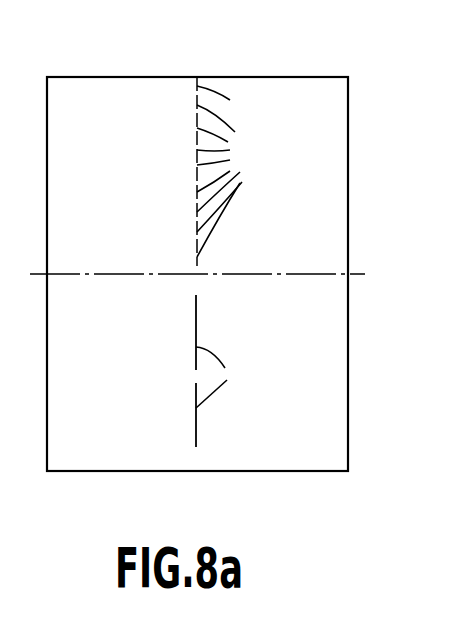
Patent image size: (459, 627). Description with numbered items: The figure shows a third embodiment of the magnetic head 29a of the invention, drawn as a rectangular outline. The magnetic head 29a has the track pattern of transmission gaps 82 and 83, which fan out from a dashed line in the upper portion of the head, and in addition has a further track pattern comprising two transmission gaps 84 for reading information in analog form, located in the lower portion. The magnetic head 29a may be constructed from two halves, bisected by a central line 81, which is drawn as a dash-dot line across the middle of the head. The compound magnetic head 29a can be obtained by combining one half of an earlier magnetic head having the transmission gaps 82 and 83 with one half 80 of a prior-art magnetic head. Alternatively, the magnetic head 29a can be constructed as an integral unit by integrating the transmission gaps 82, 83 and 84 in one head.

The magnetic head 29a is at (68, 72).
The half of the prior-art magnetic head 80 is at (100, 456).
The central line 81 is at (354, 272).
The transmission gaps 82 is at (228, 200).
The transmission gaps 83 is at (228, 114).
The transmission gaps 84 is at (227, 371).